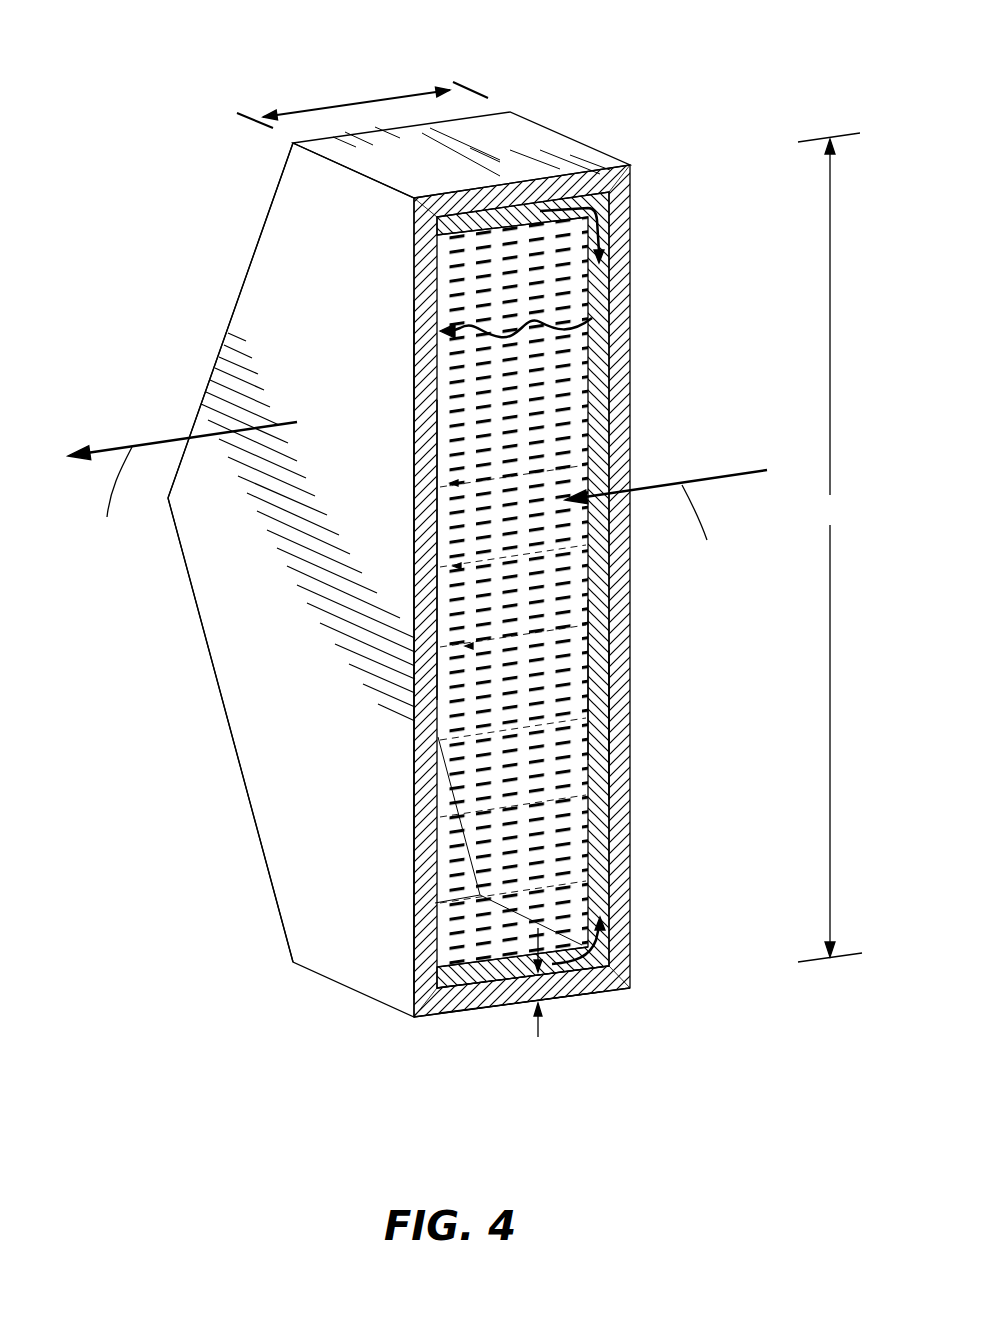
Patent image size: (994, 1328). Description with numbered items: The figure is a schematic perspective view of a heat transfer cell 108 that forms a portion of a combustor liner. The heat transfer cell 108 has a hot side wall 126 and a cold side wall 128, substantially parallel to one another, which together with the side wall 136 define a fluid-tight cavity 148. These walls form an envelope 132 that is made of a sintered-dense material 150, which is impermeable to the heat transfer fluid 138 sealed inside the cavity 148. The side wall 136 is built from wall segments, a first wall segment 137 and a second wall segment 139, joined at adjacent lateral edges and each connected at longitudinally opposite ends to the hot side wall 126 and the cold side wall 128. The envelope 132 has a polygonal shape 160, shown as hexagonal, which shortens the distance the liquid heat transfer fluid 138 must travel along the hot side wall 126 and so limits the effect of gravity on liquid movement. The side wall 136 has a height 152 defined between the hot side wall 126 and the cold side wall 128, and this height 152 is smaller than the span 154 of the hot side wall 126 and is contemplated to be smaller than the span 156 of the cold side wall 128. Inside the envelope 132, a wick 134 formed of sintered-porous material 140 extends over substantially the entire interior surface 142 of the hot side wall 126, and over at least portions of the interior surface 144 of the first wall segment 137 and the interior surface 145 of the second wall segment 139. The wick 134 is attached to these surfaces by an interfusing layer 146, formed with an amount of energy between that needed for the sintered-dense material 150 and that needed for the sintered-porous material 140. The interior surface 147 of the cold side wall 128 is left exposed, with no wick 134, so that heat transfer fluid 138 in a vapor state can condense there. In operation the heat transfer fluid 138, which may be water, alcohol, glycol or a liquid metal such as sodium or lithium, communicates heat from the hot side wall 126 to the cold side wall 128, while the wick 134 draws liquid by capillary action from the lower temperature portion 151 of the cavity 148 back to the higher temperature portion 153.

The heat transfer cell 108 is at (325, 1063).
The hot side wall 126 is at (633, 867).
The cold side wall 128 is at (246, 513).
The envelope 132 is at (275, 622).
The wick 134 is at (500, 953).
The side wall 136 is at (522, 1004).
The first wall segment 137 is at (502, 1007).
The heat transfer fluid 138 is at (598, 214).
The second wall segment 139 is at (498, 158).
The sintered-porous material 140 is at (598, 647).
The interior surface of hot side wall 142 is at (607, 718).
The interior surface of first wall segment 144 is at (473, 983).
The interior surface of second wall segment 145 is at (493, 215).
The interfusing layer 146 is at (606, 985).
The interior surface of cold side wall 147 is at (603, 367).
The fluid-tight cavity 148 is at (516, 401).
The sintered-dense material 150 is at (425, 853).
The lower temperature portion 151 is at (448, 547).
The height 152 is at (372, 98).
The higher temperature portion 153 is at (596, 674).
The span of hot side wall 154 is at (830, 547).
The span of cold side wall 156 is at (830, 547).
The polygonal shape 160 is at (237, 300).